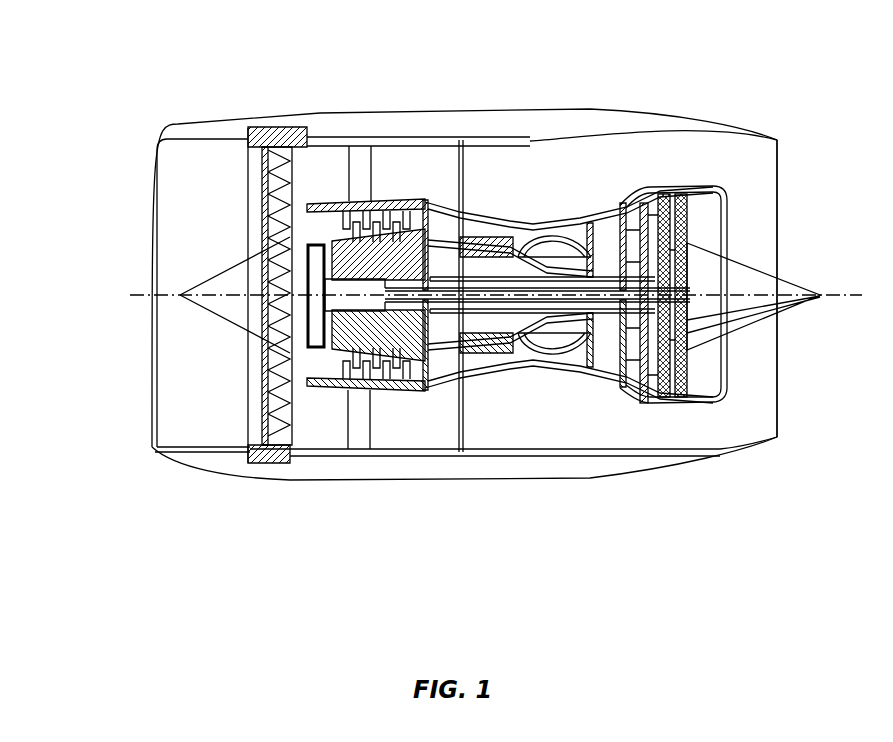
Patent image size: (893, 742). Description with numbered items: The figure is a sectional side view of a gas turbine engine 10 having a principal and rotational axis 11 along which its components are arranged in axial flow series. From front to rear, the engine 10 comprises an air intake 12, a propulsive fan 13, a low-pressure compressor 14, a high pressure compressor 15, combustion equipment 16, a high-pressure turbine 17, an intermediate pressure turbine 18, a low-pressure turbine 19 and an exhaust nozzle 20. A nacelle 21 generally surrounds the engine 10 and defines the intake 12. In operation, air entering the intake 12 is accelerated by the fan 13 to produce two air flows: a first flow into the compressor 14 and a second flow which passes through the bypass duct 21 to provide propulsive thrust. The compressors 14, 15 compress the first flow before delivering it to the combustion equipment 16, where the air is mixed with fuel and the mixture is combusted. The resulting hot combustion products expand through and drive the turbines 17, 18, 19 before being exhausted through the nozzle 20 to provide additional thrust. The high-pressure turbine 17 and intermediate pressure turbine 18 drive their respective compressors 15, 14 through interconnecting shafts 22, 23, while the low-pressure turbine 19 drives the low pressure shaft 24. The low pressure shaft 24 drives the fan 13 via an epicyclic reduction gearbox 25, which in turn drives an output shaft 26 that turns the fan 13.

The gas turbine engine 10 is at (135, 180).
The principal and rotational axis 11 is at (178, 295).
The air intake 12 is at (211, 143).
The propulsive fan 13 is at (266, 418).
The low-pressure compressor 14 is at (394, 378).
The high pressure compressor 15 is at (478, 238).
The combustion equipment 16 is at (553, 357).
The high-pressure turbine 17 is at (591, 355).
The intermediate pressure turbine 18 is at (621, 214).
The low-pressure turbine 19 is at (640, 381).
The exhaust nozzle 20 is at (777, 438).
The nacelle 21 is at (590, 108).
The interconnecting shaft 22 is at (553, 272).
The interconnecting shaft 23 is at (432, 308).
The low pressure shaft 24 is at (488, 293).
The epicyclic reduction gearbox 25 is at (312, 352).
The output shaft 26 is at (308, 262).